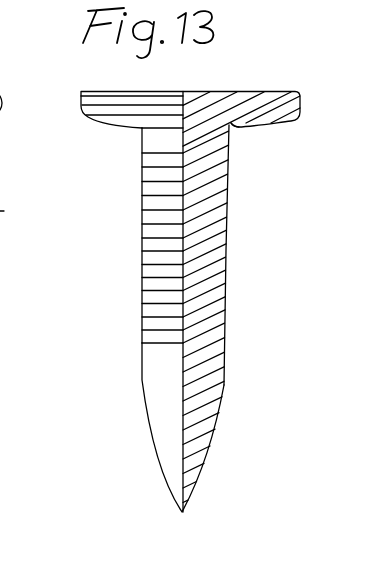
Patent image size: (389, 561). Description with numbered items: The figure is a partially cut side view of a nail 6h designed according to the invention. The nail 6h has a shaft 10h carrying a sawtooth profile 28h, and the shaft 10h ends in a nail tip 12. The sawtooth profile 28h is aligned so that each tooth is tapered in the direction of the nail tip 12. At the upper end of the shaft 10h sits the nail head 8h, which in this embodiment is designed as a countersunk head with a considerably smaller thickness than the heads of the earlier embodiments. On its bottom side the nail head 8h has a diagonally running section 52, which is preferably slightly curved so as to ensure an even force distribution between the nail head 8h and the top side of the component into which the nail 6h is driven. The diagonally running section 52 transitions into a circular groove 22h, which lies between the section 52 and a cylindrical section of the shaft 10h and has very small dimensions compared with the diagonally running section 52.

The nail 6h is at (166, 276).
The nail head 8h is at (182, 109).
The diagonally running section 52 is at (103, 123).
The circular groove 22h is at (232, 124).
The shaft 10h is at (135, 255).
The sawtooth profile 28h is at (140, 253).
The nail tip 12 is at (132, 323).